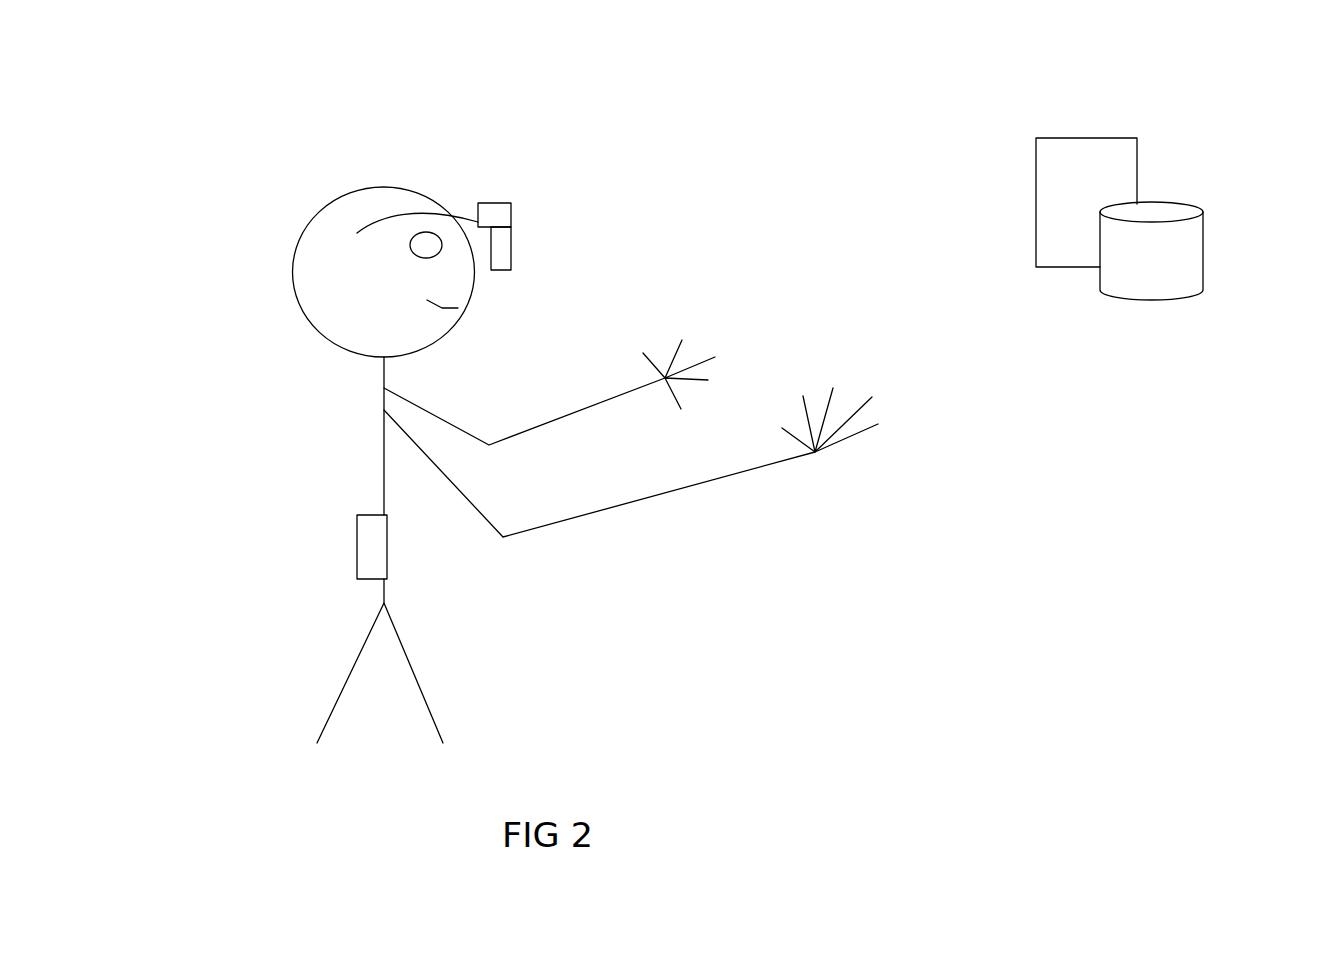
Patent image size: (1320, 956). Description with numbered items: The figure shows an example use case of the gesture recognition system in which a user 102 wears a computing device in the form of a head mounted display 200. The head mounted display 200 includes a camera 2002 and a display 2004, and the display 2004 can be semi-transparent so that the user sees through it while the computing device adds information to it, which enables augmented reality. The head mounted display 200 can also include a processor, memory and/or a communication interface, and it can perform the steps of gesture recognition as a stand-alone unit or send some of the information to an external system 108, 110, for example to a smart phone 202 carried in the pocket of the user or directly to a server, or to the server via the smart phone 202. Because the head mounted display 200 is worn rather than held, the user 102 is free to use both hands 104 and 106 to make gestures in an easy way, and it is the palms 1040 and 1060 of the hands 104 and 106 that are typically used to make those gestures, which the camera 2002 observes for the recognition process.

The user 102 is at (317, 258).
The hand 104 is at (443, 423).
The palm 1040 is at (692, 345).
The hand 106 is at (540, 540).
The palm 1060 is at (832, 455).
The external system 108 is at (1097, 158).
The external system 110 is at (1187, 260).
The head mounted display 200 is at (556, 173).
The camera 2002 is at (503, 205).
The display 2004 is at (511, 250).
The smart phone 202 is at (353, 562).